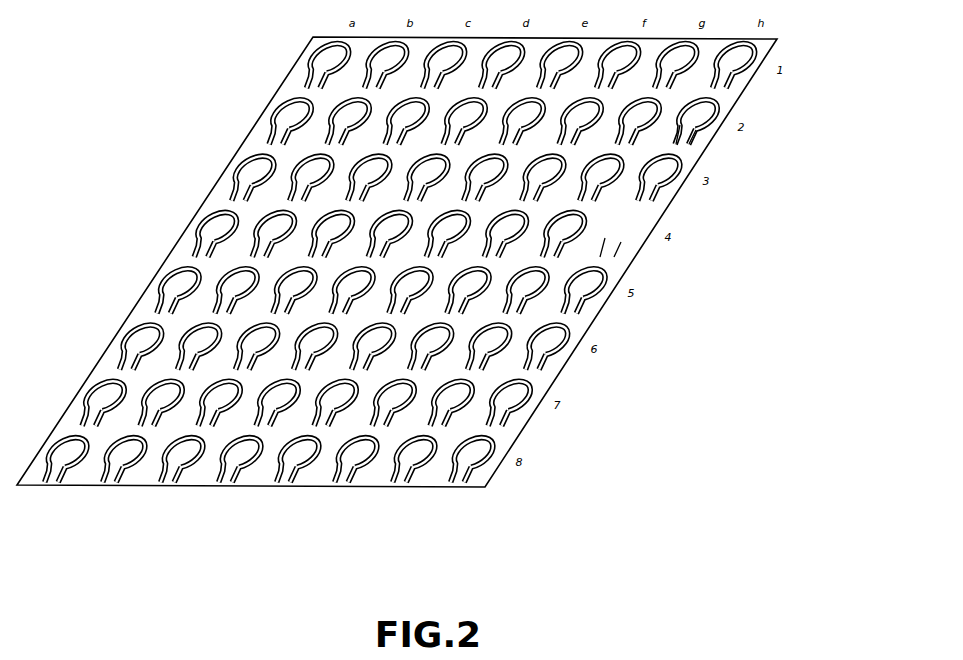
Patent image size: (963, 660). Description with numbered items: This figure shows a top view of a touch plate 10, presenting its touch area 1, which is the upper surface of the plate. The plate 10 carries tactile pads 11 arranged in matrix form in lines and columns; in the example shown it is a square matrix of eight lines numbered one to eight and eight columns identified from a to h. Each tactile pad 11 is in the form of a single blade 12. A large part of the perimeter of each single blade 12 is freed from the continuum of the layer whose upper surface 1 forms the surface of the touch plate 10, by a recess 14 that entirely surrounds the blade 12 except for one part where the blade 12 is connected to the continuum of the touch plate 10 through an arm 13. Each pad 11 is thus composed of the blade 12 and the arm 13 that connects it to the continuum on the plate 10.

The touch area 1 is at (776, 41).
The touch plate 10 is at (444, 263).
The tactile pad 11 is at (705, 113).
The single blade 12 is at (662, 179).
The arm 13 is at (615, 250).
The recess 14 is at (707, 133).